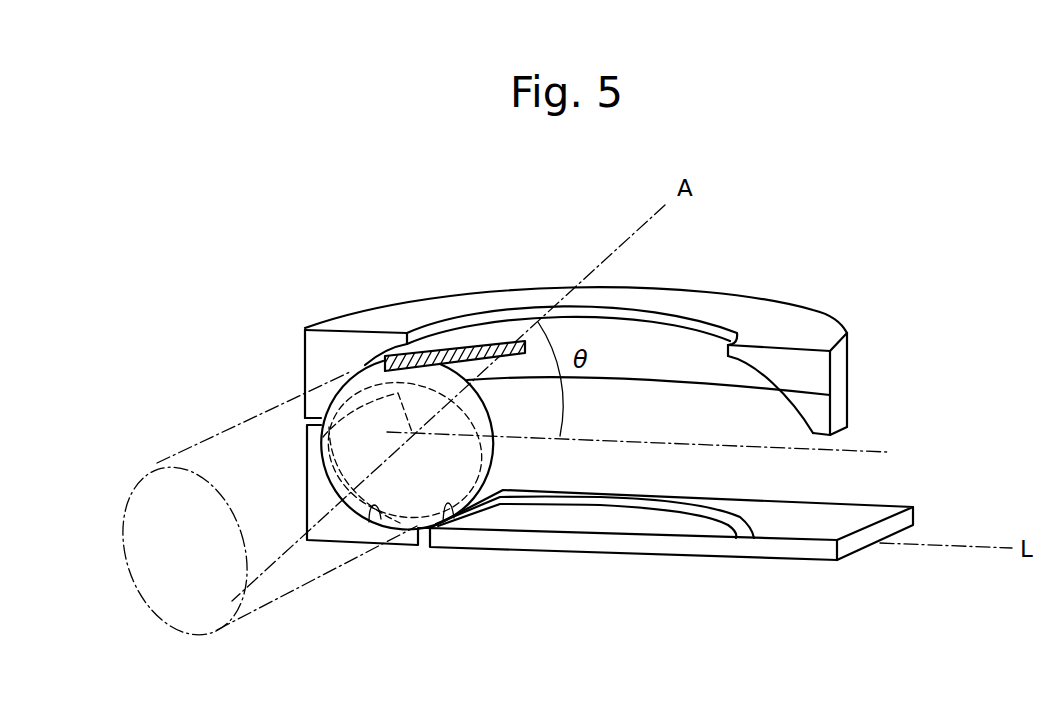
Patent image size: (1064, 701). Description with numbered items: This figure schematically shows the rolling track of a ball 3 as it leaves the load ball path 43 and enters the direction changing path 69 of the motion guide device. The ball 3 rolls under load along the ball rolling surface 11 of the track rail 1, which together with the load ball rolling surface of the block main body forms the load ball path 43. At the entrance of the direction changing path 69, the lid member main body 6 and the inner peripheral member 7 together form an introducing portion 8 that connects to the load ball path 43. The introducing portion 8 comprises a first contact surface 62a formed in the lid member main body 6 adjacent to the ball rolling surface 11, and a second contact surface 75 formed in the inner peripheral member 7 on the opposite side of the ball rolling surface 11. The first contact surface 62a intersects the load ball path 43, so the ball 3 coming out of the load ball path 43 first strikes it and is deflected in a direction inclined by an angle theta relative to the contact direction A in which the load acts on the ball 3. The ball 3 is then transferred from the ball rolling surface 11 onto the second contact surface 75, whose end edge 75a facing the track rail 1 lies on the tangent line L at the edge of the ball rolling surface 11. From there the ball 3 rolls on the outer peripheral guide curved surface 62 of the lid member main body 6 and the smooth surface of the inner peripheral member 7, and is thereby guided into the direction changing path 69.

The track rail 1 is at (300, 464).
The ball 3 is at (345, 397).
The lid member main body 6 is at (370, 304).
The inner peripheral member 7 is at (736, 568).
The introducing portion 8 is at (738, 537).
The ball rolling surface 11 is at (369, 522).
The load ball path 43 is at (156, 470).
The outer peripheral guide curved surface 62 is at (668, 320).
The first contact surface 62a is at (480, 340).
The direction changing path 69 is at (747, 413).
The second contact surface 75 is at (503, 497).
The end edge 75a is at (454, 518).